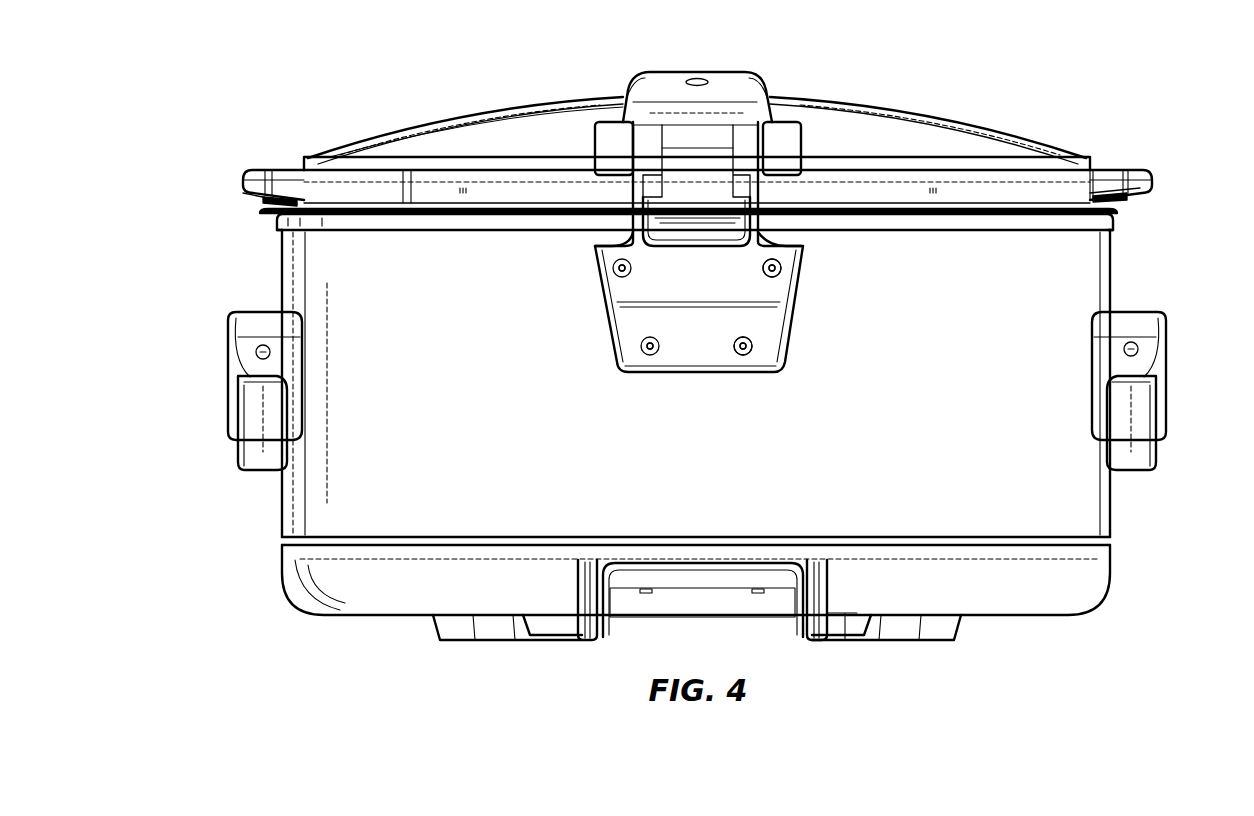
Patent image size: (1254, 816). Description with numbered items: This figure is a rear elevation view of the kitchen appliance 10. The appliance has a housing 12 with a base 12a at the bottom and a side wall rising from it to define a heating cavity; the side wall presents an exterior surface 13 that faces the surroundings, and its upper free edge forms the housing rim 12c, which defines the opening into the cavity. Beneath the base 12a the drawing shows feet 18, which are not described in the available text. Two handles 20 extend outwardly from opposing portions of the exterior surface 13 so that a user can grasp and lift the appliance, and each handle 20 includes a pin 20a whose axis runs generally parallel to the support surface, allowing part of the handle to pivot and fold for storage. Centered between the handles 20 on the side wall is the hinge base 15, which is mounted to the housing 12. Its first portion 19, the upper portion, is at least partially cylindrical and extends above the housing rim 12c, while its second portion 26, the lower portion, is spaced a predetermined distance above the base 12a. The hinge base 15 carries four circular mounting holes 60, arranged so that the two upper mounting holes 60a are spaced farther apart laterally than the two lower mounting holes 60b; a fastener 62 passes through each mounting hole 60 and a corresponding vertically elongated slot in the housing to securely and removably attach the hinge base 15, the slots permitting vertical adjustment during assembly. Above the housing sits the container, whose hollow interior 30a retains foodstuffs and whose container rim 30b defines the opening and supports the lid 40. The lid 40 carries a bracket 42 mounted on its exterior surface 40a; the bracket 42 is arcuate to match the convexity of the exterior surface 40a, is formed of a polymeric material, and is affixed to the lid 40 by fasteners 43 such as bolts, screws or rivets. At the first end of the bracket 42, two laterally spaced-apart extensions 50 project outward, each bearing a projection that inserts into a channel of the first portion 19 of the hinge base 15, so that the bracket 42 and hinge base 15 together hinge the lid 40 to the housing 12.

The kitchen appliance 10 is at (950, 42).
The housing 12 is at (1045, 462).
The base 12a is at (1075, 585).
The housing rim 12c is at (1102, 220).
The exterior surface 13 is at (1085, 262).
The hinge base 15 is at (765, 330).
The feet 18 is at (494, 642).
The first portion 19 is at (707, 137).
The handle 20 is at (243, 292).
The pin 20a is at (256, 353).
The second portion 26 is at (688, 380).
The interior 30a is at (327, 188).
The container rim 30b is at (1115, 167).
The lid 40 is at (913, 137).
The exterior surface 40a is at (483, 116).
The bracket 42 is at (723, 80).
The fastener 43 is at (698, 80).
The extension 50 is at (613, 143).
The mounting hole 60 is at (613, 268).
The upper mounting holes 60a is at (781, 268).
The lower mounting holes 60b is at (752, 348).
The fastener 62 is at (616, 272).